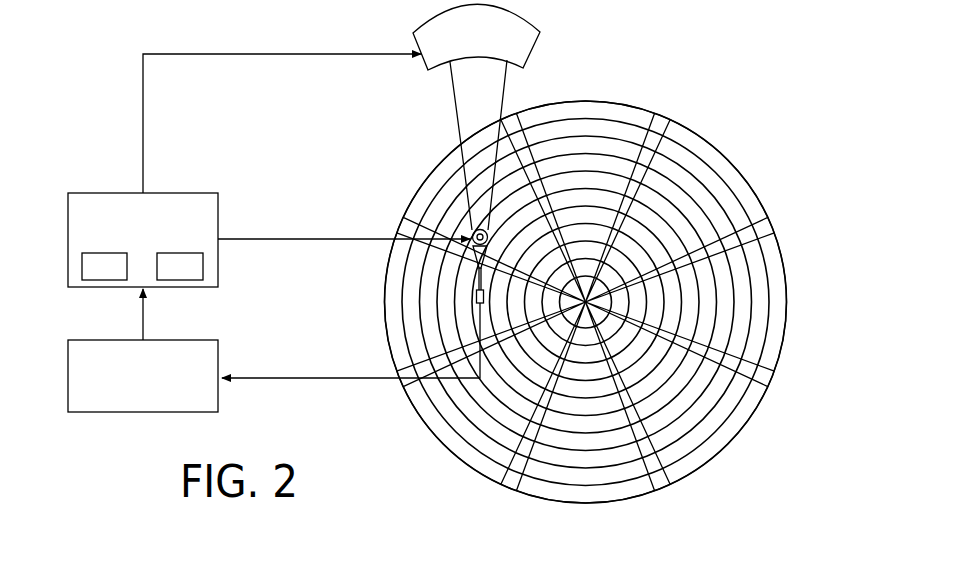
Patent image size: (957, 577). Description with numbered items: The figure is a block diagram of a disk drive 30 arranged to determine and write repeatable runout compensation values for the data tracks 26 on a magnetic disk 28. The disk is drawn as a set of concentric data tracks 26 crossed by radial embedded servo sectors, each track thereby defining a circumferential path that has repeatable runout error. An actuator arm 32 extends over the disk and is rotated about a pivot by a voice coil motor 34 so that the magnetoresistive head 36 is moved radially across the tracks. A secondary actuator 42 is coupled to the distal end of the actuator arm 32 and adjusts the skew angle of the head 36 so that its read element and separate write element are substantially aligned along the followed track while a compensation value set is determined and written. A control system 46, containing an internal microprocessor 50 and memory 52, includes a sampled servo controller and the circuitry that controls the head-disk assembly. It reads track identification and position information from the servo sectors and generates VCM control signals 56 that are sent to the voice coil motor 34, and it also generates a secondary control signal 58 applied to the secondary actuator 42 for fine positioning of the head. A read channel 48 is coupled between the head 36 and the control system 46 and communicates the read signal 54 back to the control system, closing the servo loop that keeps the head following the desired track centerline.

The data tracks 26 is at (583, 130).
The magnetic disk 28 is at (726, 144).
The disk drive 30 is at (752, 62).
The actuator arm 32 is at (462, 129).
The voice coil motor (VCM) 34 is at (425, 60).
The magnetoresistive (MR) head 36 is at (476, 297).
The secondary actuator 42 is at (478, 229).
The control system 46 is at (92, 193).
The read channel 48 is at (92, 340).
The microprocessor 50 is at (104, 266).
The memory 52 is at (180, 266).
The read signal 54 is at (283, 381).
The VCM control signals 56 is at (268, 57).
The secondary control signal 58 is at (270, 242).